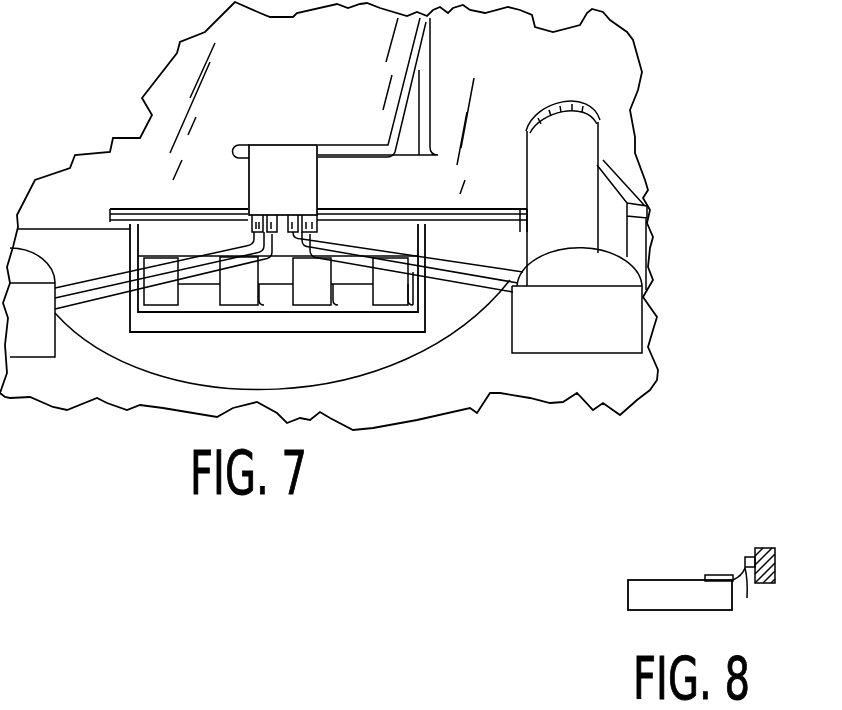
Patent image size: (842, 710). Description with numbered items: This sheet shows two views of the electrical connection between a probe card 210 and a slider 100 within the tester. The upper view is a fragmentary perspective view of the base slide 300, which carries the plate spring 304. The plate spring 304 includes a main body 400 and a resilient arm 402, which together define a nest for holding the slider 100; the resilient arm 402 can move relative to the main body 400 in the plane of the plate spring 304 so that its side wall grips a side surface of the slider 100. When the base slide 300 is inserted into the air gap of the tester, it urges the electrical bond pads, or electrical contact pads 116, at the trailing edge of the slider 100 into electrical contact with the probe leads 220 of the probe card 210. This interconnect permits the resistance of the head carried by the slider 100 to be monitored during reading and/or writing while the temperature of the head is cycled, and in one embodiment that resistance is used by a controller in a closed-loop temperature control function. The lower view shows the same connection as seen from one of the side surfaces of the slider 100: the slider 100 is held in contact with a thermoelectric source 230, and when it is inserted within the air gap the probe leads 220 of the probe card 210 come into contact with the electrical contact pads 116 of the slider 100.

In FIG. 7, the slider 100 is at (294, 153).
In FIG. 8, the slider 100 is at (715, 575).
In FIG. 7, the electrical contact pads 116 is at (273, 220).
In FIG. 7, the probe card 210 is at (39, 342).
In FIG. 8, the probe card 210 is at (763, 550).
In FIG. 7, the probe leads 220 is at (120, 288).
In FIG. 8, the probe leads 220 is at (760, 593).
In FIG. 7, the thermoelectric source 230 is at (333, 317).
In FIG. 8, the thermoelectric source 230 is at (643, 590).
In FIG. 7, the base slide 300 is at (647, 93).
In FIG. 7, the plate spring 304 is at (631, 133).
In FIG. 7, the main body 400 is at (298, 56).
In FIG. 7, the resilient arm 402 is at (540, 88).